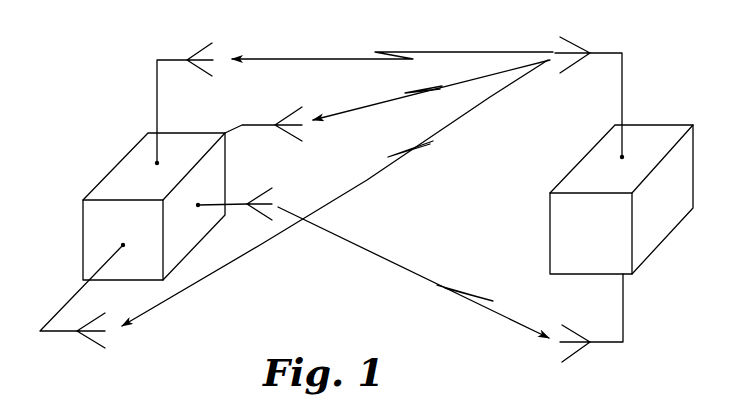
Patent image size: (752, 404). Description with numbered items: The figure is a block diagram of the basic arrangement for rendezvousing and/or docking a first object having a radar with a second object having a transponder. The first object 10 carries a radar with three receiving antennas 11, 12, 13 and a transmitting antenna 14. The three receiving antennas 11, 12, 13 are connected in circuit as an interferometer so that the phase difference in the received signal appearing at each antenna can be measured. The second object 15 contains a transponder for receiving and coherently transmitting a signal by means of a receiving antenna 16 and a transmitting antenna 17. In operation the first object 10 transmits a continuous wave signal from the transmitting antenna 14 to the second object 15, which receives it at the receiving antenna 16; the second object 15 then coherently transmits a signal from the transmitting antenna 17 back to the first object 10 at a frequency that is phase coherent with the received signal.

The first object 10 is at (77, 160).
The receiving antenna 11 is at (202, 50).
The receiving antenna 12 is at (294, 114).
The receiving antenna 13 is at (92, 321).
The transmitting antenna 14 is at (266, 192).
The second object 15 is at (672, 109).
The receiving antenna 16 is at (570, 331).
The transmitting antenna 17 is at (568, 44).